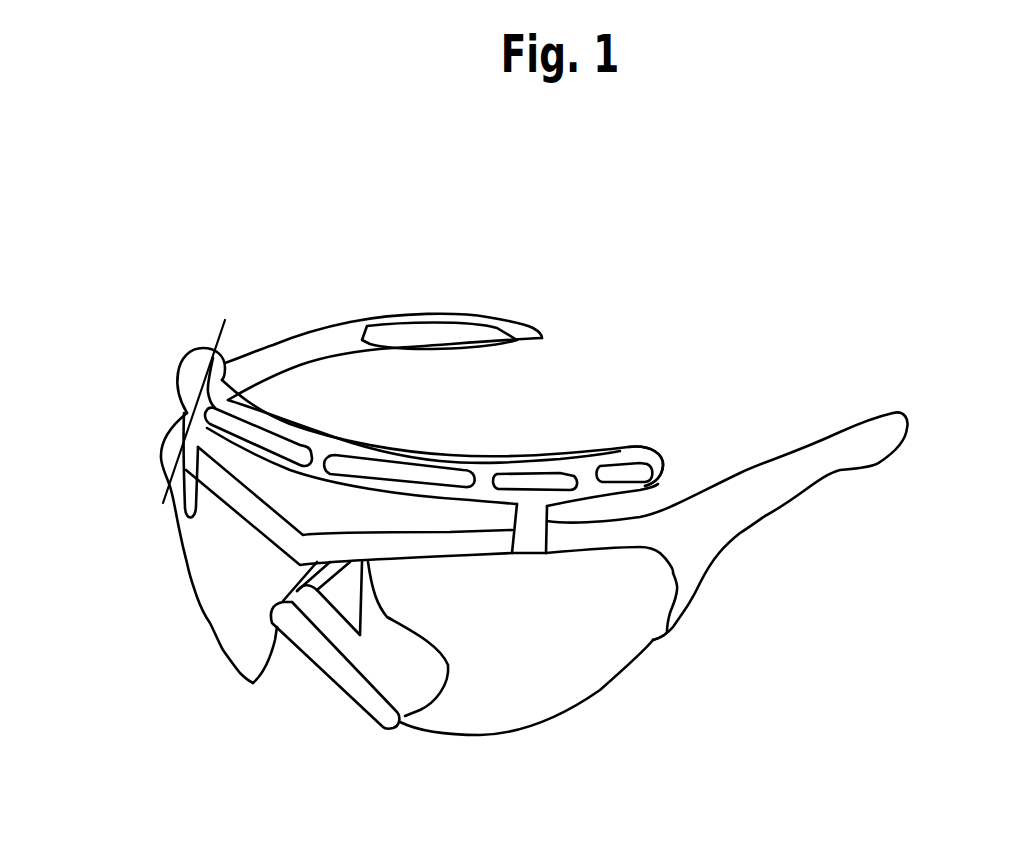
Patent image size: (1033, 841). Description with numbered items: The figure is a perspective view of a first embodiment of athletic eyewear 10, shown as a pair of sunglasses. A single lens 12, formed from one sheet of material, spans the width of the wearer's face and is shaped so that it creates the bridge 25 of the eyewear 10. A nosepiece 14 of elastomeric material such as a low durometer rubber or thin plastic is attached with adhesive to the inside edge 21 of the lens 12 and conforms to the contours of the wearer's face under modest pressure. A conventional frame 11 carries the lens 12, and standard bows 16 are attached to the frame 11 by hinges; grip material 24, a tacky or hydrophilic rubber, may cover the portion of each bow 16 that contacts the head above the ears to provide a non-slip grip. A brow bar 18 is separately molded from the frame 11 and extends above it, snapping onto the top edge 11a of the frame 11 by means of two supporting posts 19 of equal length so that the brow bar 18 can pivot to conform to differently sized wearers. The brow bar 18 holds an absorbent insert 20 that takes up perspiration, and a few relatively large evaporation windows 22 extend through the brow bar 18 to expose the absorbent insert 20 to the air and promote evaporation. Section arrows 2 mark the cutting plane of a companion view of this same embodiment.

The eyewear 10 is at (120, 417).
The section line of FIG. 2 is at (225, 320).
The frame 11 is at (223, 497).
The top edge 11a is at (457, 543).
The lens 12 is at (577, 660).
The nosepiece 14 is at (358, 677).
The bow 16 is at (282, 352).
The brow bar 18 is at (657, 467).
The supporting post 19 is at (550, 530).
The absorbent insert 20 is at (560, 453).
The inside edge of lens 21 is at (253, 683).
The evaporation window 22 is at (410, 477).
The grip material 24 is at (453, 332).
The bridge 25 is at (263, 575).